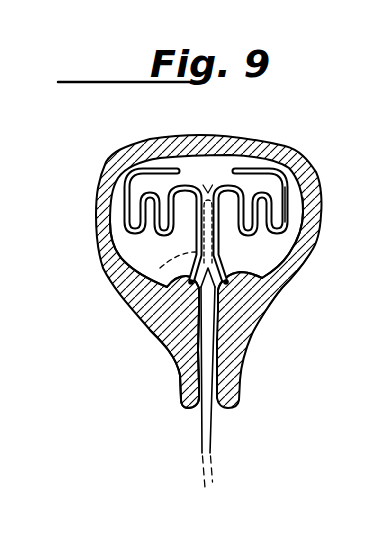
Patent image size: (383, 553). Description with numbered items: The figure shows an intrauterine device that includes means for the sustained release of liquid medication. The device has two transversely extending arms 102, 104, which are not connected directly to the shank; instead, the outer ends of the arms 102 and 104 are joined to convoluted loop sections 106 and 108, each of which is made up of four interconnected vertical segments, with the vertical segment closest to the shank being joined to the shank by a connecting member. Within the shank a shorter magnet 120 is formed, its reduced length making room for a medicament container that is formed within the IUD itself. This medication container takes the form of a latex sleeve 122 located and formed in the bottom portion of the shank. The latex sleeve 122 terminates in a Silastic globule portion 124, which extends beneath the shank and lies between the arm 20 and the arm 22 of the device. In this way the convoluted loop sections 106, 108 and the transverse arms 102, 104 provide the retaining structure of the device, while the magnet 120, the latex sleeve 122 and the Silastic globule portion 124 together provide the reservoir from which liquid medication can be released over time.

The arm 20 is at (278, 286).
The arm 22 is at (180, 279).
The transversely extending arm 102 is at (158, 167).
The transversely extending arm 104 is at (265, 167).
The convoluted loop section 106 is at (111, 228).
The convoluted loop section 108 is at (302, 213).
The magnet 120 is at (197, 228).
The latex sleeve 122 is at (124, 286).
The Silastic globule portion 124 is at (177, 333).